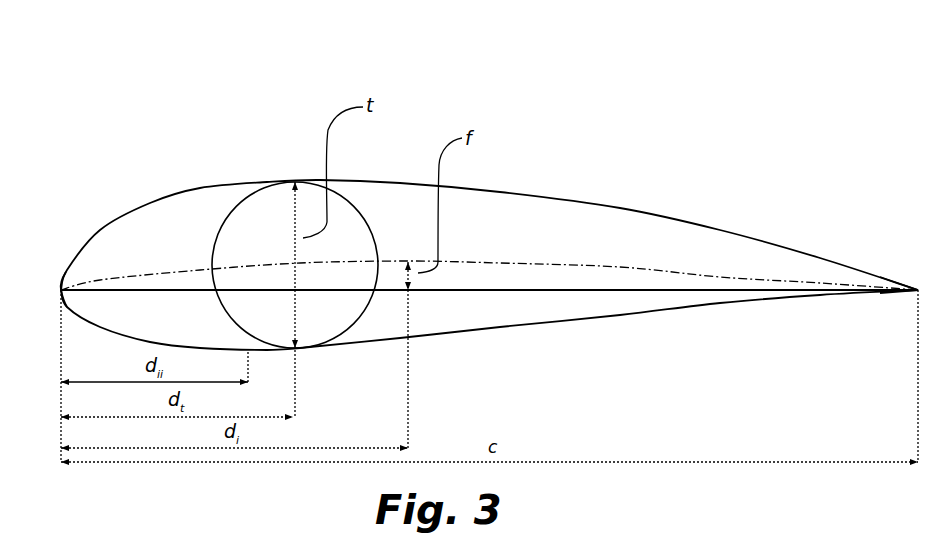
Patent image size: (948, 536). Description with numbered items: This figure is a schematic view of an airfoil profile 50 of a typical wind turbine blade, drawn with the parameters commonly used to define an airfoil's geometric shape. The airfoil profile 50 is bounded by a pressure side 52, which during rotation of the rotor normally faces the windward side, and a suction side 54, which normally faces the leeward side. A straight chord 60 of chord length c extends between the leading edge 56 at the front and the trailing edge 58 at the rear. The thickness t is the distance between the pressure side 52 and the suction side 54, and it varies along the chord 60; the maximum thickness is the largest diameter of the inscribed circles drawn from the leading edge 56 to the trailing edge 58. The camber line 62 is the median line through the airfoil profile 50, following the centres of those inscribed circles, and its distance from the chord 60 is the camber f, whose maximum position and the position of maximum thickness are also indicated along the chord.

The airfoil profile 50 is at (471, 209).
The pressure side 52 is at (655, 317).
The suction side 54 is at (594, 204).
The leading edge 56 is at (61, 288).
The trailing edge 58 is at (918, 288).
The chord 60 is at (700, 287).
The camber line 62 is at (480, 262).